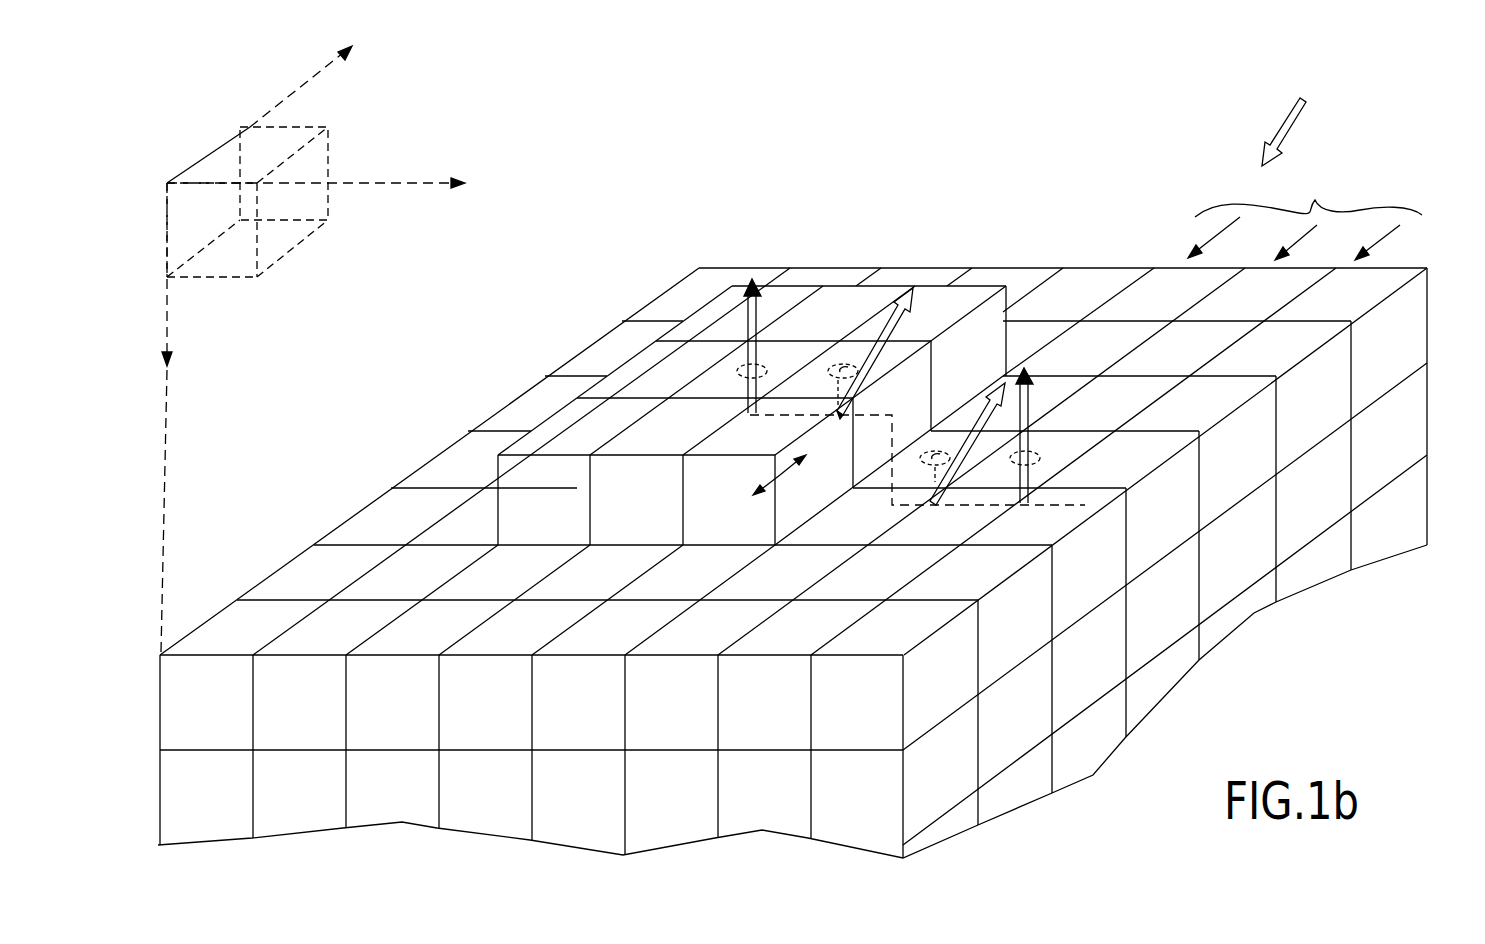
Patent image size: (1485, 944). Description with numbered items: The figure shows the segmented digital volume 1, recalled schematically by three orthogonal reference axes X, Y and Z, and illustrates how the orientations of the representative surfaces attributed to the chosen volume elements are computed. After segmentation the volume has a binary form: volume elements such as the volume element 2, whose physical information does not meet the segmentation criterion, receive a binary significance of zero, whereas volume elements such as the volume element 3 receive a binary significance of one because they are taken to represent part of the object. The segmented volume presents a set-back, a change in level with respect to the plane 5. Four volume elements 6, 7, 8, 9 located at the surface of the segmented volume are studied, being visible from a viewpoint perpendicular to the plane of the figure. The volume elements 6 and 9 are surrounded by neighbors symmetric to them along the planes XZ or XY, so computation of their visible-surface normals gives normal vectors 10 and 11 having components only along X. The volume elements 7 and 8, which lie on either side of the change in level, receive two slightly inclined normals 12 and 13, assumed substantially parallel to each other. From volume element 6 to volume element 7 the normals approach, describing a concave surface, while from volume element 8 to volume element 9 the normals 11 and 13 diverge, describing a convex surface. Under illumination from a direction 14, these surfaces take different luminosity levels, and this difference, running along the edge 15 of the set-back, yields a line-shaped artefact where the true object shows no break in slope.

The digital volume 1 is at (370, 207).
The volume element 2 is at (237, 148).
The volume element 3 is at (223, 628).
The plane face 5 is at (1305, 218).
The volume element 6 is at (1053, 455).
The volume element 7 is at (912, 467).
The volume element 8 is at (903, 392).
The volume element 9 is at (790, 358).
The normal vector 10 is at (1040, 410).
The normal vector 11 is at (743, 315).
The normal 12 is at (997, 407).
The normal 13 is at (888, 320).
The illumination direction 14 is at (1293, 116).
The edge 15 is at (784, 471).